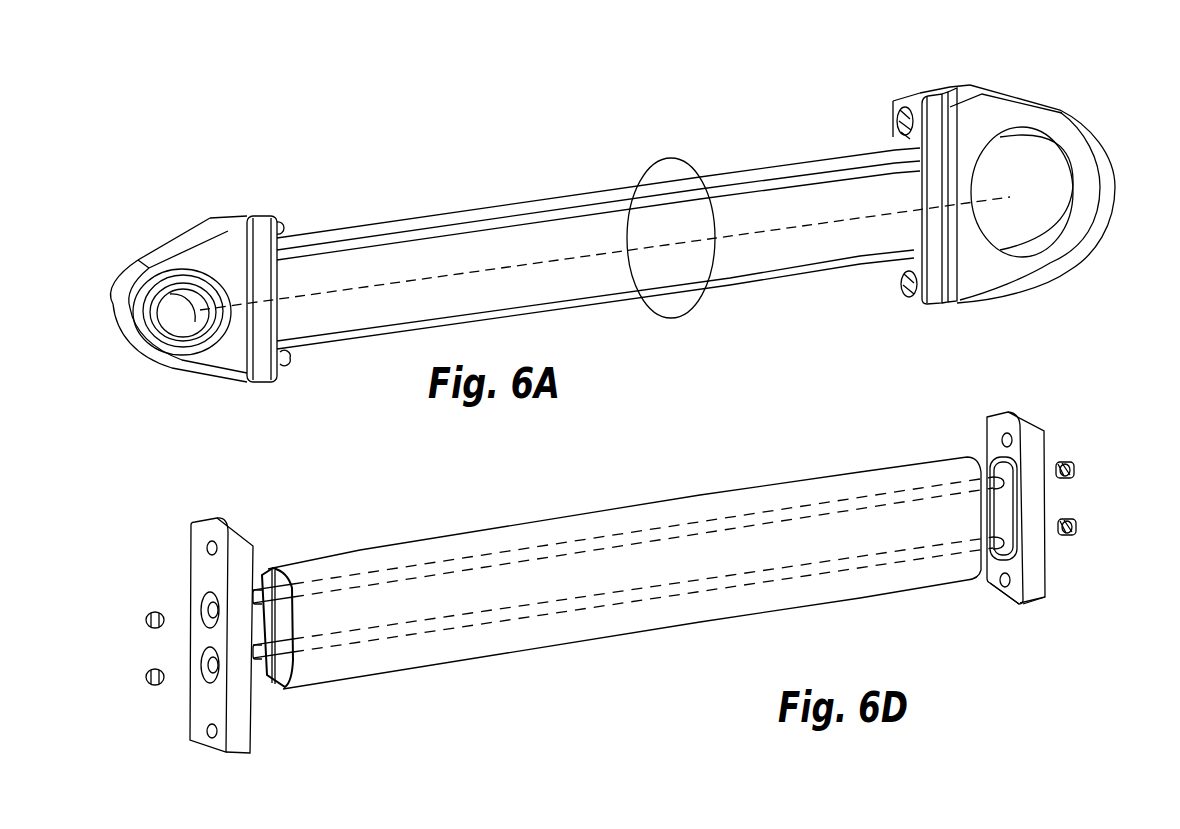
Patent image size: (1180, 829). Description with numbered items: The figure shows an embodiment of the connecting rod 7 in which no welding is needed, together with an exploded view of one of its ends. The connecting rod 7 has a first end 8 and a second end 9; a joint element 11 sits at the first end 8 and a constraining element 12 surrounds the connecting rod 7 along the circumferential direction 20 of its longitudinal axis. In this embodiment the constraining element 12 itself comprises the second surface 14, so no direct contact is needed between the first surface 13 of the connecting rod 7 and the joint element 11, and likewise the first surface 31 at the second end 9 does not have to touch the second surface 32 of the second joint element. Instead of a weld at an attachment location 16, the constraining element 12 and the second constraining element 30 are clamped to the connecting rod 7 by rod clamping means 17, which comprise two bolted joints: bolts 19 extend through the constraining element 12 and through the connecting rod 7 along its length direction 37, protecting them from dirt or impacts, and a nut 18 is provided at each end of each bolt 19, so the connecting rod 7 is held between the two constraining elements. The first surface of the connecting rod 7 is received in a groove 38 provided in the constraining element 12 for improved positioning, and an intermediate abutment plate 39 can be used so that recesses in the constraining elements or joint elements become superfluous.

In FIG. 6D, the connecting rod 7 is at (858, 482).
In FIG. 6A, the first end of the connecting rod 8 is at (873, 137).
In FIG. 6A, the second end of the connecting rod 9 is at (291, 211).
In FIG. 6A, the joint element 11 is at (1078, 104).
In FIG. 6D, the constraining element 12 is at (1028, 428).
In FIG. 6D, the first surface of the connecting rod 13 is at (990, 477).
In FIG. 6D, the second surface 14 is at (1017, 598).
In FIG. 6D, the attachment location 16 is at (1060, 505).
In FIG. 6D, the rod clamping means 17 is at (1095, 413).
In FIG. 6D, the nut 18 is at (142, 627).
In FIG. 6D, the bolt 19 is at (777, 511).
In FIG. 6A, the circumferential direction 20 is at (630, 178).
In FIG. 6D, the second constraining element 30 is at (217, 517).
In FIG. 6D, the first surface of the second end of the connecting rod 31 is at (273, 572).
In FIG. 6D, the second surface of the second joint element 32 is at (258, 533).
In FIG. 6A, the length direction of the connecting rod 37 is at (770, 233).
In FIG. 6D, the groove 38 is at (1022, 566).
In FIG. 6A, the intermediate abutment plate 39 is at (912, 92).